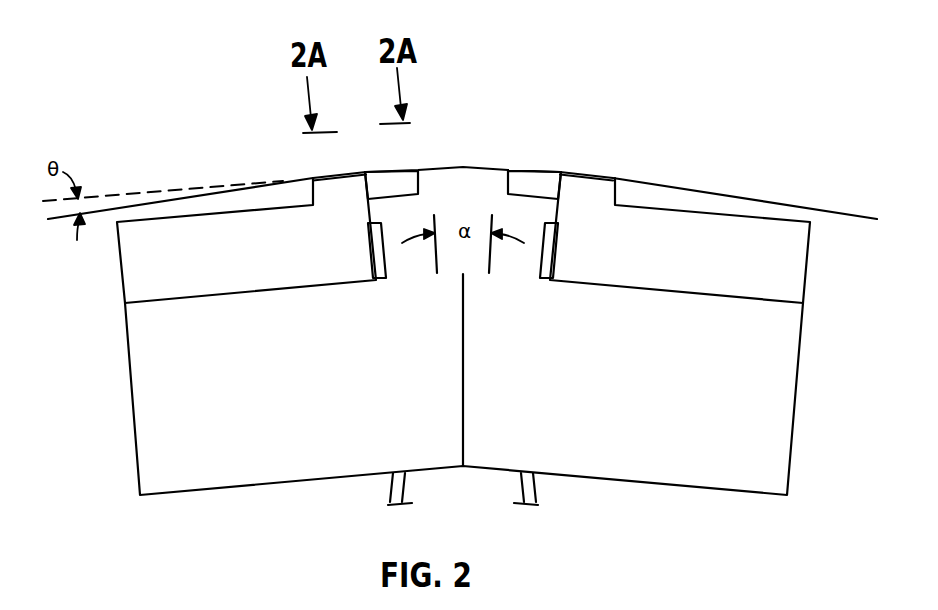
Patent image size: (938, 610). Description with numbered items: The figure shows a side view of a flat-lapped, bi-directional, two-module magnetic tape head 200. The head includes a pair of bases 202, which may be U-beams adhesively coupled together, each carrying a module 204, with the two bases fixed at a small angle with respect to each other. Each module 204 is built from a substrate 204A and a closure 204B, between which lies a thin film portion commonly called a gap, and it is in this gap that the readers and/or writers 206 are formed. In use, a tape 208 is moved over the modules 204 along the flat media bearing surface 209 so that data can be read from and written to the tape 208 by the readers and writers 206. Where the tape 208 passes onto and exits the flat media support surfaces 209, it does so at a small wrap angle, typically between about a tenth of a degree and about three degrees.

The two-module magnetic tape head 200 is at (172, 130).
The base 202 is at (128, 373).
The module 204 is at (120, 270).
The substrate 204A is at (183, 245).
The closure 204B is at (510, 183).
The readers and/or writers 206 is at (376, 158).
The tape 208 is at (718, 193).
The media bearing surface 209 is at (310, 160).